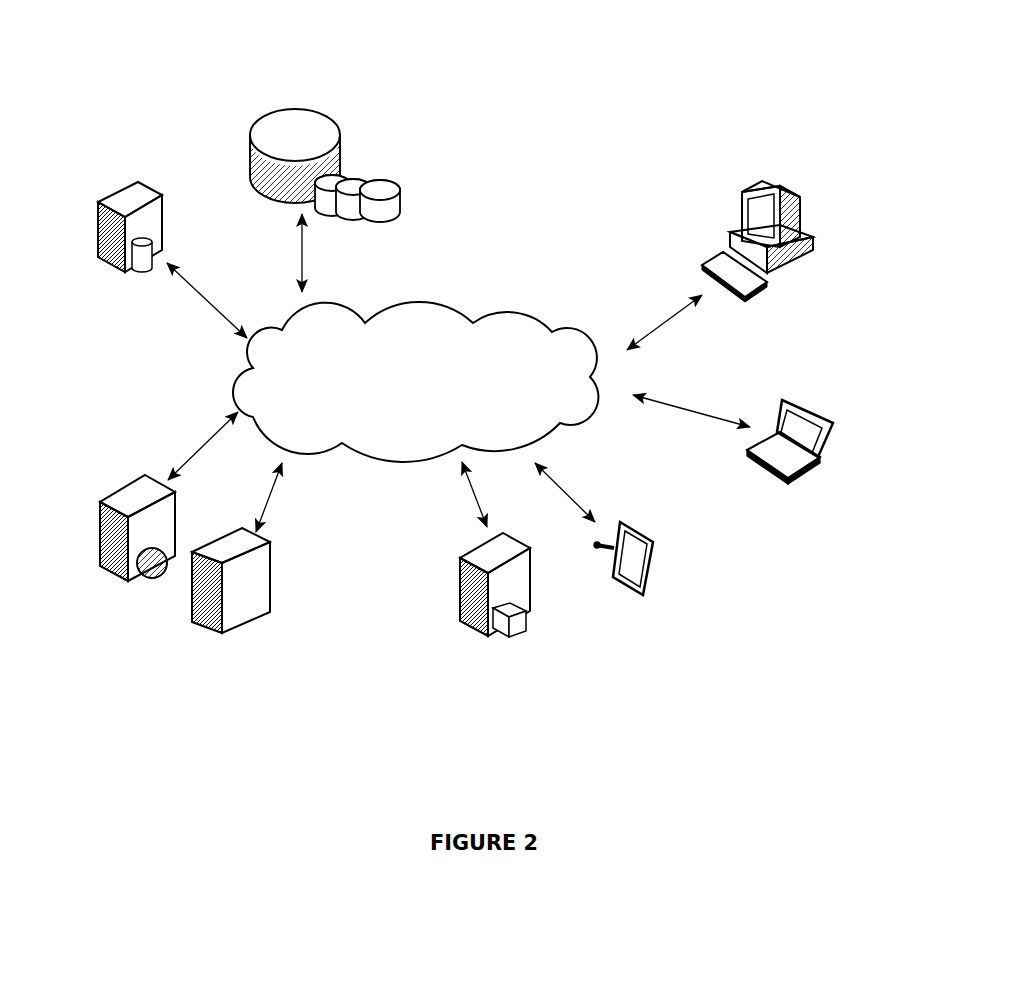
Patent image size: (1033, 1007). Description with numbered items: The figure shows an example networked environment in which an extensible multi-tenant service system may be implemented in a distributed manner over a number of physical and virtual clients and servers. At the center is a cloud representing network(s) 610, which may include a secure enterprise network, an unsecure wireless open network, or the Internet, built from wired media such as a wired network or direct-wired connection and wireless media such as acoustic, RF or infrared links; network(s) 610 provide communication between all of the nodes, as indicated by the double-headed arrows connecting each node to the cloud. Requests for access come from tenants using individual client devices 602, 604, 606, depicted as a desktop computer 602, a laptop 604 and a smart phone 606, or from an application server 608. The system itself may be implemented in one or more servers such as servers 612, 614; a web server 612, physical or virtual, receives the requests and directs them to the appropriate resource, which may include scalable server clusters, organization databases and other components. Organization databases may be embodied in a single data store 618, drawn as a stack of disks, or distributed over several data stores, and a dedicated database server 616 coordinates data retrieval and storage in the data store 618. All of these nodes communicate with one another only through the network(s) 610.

The client device 602 is at (797, 177).
The client device 604 is at (830, 402).
The client device 606 is at (643, 520).
The application server 608 is at (500, 644).
The network(s) 610 is at (487, 305).
The web server 612 is at (137, 580).
The server 614 is at (227, 641).
The database server 616 is at (138, 272).
The data store 618 is at (311, 87).